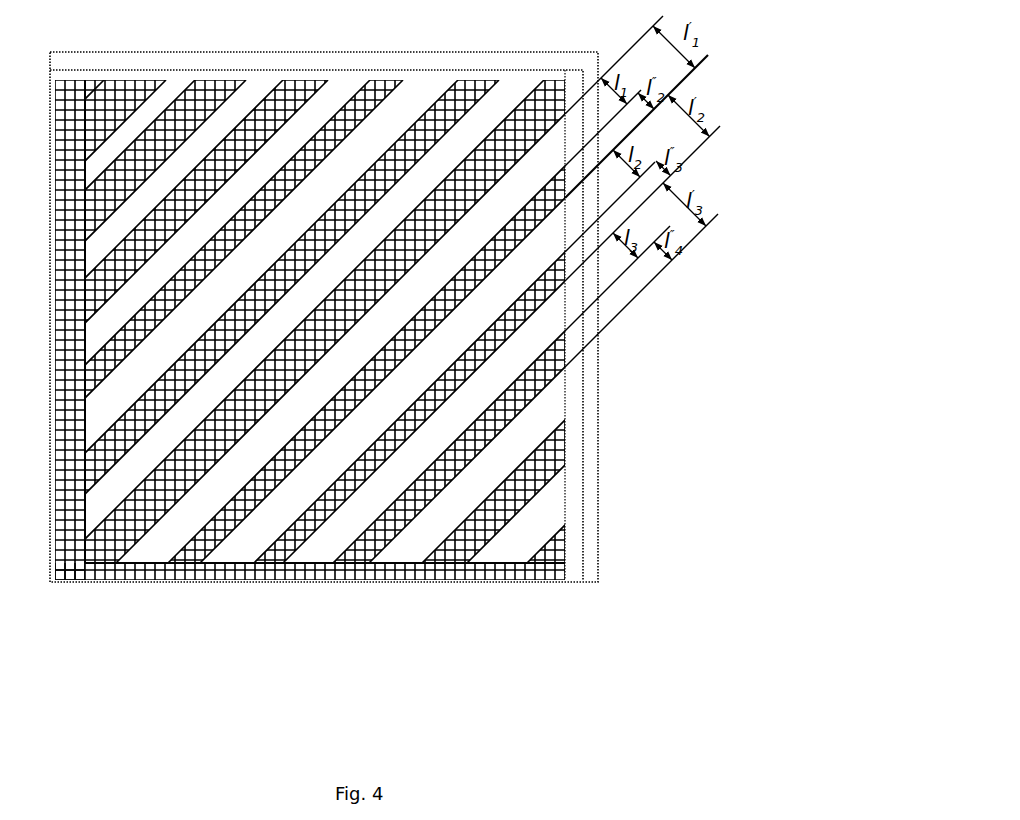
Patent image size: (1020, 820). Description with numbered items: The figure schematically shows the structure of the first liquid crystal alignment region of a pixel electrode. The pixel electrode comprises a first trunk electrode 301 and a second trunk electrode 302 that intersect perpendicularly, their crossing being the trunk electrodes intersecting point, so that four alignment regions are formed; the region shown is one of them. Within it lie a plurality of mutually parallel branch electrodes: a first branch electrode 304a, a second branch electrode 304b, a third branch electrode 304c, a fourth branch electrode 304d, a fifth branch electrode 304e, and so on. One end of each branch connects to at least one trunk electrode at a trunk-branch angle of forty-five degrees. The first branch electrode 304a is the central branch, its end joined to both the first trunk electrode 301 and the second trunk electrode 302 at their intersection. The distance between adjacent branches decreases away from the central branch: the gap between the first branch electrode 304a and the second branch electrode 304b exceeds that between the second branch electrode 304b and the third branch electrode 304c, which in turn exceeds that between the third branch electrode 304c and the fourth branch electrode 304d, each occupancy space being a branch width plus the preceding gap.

The first trunk electrode 301 is at (590, 583).
The second trunk electrode 302 is at (62, 518).
The first branch electrode 304a is at (155, 490).
The second branch electrode 304b is at (227, 520).
The third branch electrode 304c is at (303, 537).
The fourth branch electrode 304d is at (387, 512).
The fifth branch electrode 304e is at (472, 538).